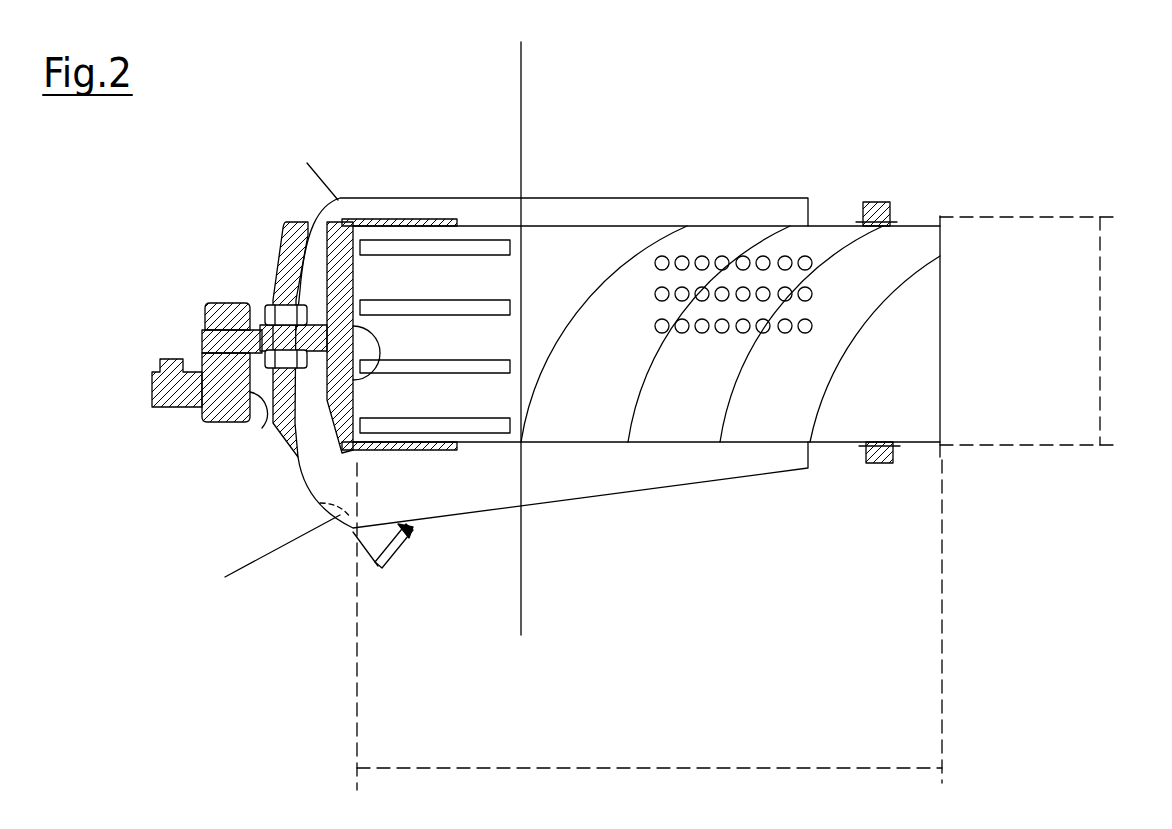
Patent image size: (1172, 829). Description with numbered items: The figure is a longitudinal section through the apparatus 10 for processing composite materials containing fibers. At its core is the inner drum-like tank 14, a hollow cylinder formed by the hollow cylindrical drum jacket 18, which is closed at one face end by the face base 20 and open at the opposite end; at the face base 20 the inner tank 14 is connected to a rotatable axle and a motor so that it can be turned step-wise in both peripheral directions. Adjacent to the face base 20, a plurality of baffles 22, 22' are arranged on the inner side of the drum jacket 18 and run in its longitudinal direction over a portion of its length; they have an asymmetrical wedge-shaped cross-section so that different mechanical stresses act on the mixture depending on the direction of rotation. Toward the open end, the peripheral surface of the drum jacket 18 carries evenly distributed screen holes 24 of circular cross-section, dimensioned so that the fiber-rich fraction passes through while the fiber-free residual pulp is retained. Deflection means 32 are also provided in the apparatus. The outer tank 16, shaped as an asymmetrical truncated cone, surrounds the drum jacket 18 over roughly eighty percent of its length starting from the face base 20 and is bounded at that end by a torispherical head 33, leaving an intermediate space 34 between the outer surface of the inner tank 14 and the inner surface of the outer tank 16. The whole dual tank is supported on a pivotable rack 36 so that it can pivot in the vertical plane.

The apparatus for processing composite materials containing fibers 10 is at (173, 188).
The inner drum-like tank 14 is at (913, 223).
The outer tank 16 is at (780, 210).
The hollow cylindrical drum jacket 18 is at (575, 226).
The face base 20 is at (355, 393).
The baffle 22 is at (435, 276).
The baffle 22' is at (435, 217).
The screen hole 24 is at (812, 324).
The deflection means 32 is at (833, 383).
The torispherical head 33 is at (302, 475).
The intermediate space 34 is at (445, 492).
The rack 36 is at (855, 470).